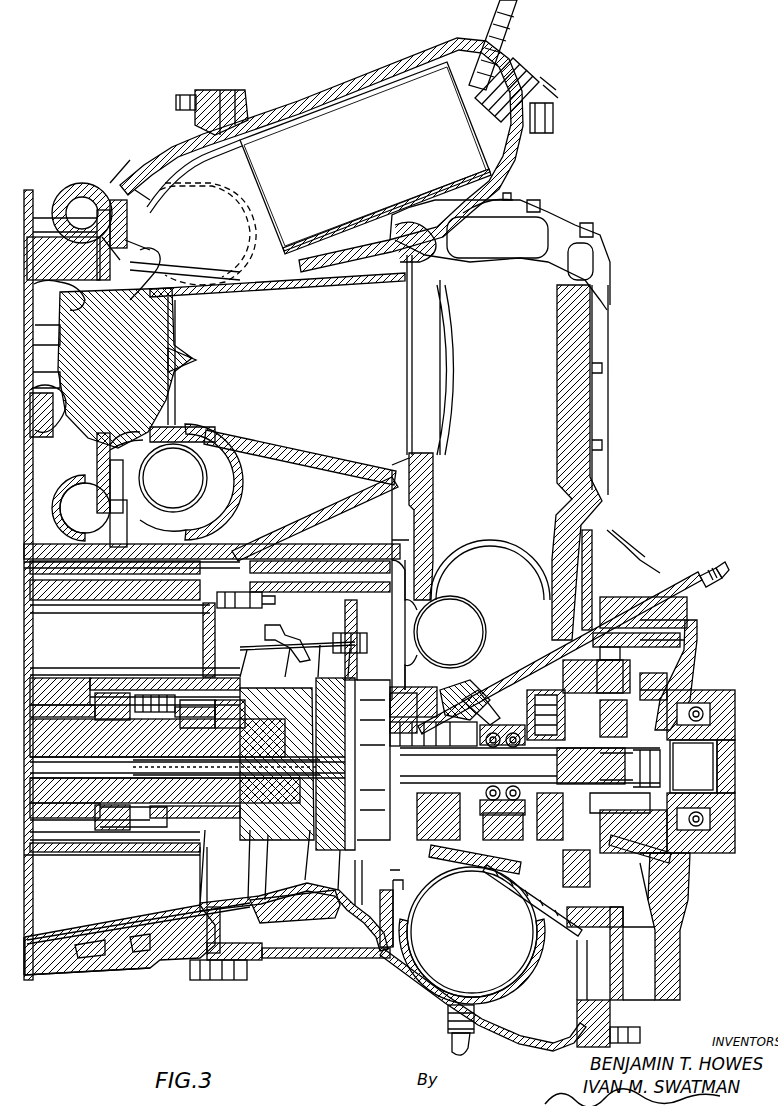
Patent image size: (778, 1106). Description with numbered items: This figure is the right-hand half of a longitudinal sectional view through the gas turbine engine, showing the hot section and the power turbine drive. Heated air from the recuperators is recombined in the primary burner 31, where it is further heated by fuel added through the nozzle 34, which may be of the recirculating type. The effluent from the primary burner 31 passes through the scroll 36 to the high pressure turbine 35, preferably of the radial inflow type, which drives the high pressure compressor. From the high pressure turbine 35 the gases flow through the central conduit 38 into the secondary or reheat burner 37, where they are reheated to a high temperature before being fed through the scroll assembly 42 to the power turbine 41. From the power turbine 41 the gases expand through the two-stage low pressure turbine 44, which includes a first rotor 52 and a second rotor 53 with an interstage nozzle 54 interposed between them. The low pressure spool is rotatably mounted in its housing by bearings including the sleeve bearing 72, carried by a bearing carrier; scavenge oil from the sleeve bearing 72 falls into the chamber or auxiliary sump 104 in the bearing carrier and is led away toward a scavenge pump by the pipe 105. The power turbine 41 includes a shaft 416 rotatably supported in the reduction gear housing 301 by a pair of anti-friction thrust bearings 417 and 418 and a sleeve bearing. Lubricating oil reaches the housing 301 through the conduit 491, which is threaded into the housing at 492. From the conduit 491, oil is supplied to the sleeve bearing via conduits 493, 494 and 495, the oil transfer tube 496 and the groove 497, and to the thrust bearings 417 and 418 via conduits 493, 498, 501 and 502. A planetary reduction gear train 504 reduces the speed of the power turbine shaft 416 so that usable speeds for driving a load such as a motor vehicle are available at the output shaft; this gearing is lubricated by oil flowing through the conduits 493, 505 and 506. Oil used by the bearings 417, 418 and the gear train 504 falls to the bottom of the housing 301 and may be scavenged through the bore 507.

The primary burner 31 is at (390, 60).
The nozzle 34 is at (540, 99).
The high pressure turbine 35 is at (170, 360).
The scroll 36 is at (262, 496).
The secondary or reheat burner 37 is at (566, 373).
The central conduit 38 is at (300, 436).
The power turbine 41 is at (318, 756).
The scroll assembly 42 is at (470, 620).
The two-stage low pressure turbine 44 is at (248, 735).
The first rotor 52 is at (240, 705).
The second rotor 53 is at (292, 895).
The interstage nozzle 54 is at (286, 644).
The sleeve bearing 72 is at (186, 700).
The chamber or auxiliary sump 104 is at (195, 835).
The pipe 105 is at (84, 850).
The reduction gear housing 301 is at (655, 568).
The shaft 416 is at (472, 771).
The anti-friction thrust bearing 417 is at (480, 785).
The anti-friction thrust bearing 418 is at (480, 800).
The conduit 491 is at (726, 568).
The threaded connection 492 is at (708, 570).
The conduit 493 is at (480, 692).
The conduit 494 is at (458, 690).
The conduit 495 is at (428, 700).
The oil transfer tube 496 is at (414, 729).
The groove 497 is at (382, 760).
The conduit 498 is at (430, 735).
The conduit 501 is at (527, 708).
The conduit 502 is at (547, 735).
The planetary reduction gear train 504 is at (603, 862).
The conduit 505 is at (622, 625).
The conduit 506 is at (697, 642).
The bore 507 is at (637, 956).